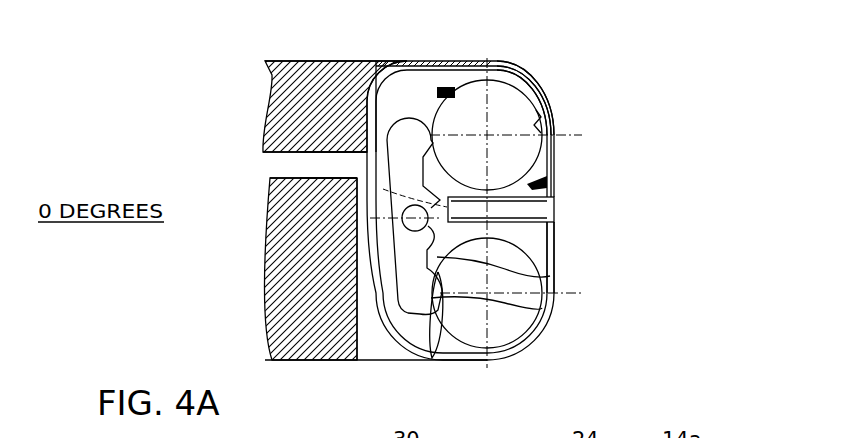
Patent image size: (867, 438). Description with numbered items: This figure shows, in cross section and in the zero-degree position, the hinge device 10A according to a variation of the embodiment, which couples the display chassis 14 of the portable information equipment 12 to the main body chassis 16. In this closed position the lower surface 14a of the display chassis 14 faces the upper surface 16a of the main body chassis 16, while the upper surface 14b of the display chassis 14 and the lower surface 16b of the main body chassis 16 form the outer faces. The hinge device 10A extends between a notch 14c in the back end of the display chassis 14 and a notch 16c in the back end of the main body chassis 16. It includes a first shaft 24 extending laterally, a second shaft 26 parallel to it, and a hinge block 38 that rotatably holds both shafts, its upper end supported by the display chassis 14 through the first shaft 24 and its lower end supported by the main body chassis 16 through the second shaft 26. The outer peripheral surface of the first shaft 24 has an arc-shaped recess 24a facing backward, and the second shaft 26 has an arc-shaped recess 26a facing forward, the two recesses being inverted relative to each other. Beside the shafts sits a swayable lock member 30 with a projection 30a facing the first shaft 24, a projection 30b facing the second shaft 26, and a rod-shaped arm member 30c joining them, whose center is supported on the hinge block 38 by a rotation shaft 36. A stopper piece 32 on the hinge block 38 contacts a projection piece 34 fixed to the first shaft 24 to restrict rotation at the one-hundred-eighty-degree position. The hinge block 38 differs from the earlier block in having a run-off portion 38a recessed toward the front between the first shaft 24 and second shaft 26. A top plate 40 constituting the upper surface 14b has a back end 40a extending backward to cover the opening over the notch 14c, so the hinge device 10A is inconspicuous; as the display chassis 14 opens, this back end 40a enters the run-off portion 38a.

The hinge device 10A is at (645, 200).
The portable information equipment 12 is at (185, 96).
The display chassis 14 is at (288, 53).
The lower surface of display chassis 14a is at (267, 152).
The upper surface of display chassis 14b is at (334, 60).
The notch 14c is at (377, 60).
The main body chassis 16 is at (288, 369).
The upper surface of main body chassis 16a is at (268, 178).
The lower surface of main body chassis 16b is at (336, 362).
The notch 16c is at (377, 362).
The first shaft 24 is at (517, 108).
The first recess 24a is at (536, 110).
The second shaft 26 is at (513, 325).
The second recess 26a is at (433, 355).
The lock member 30 is at (401, 104).
The projection 30a is at (481, 85).
The projection 30b is at (546, 303).
The arm member 30c is at (553, 275).
The stopper piece 32 is at (548, 183).
The projection piece 34 is at (464, 60).
The rotation shaft 36 is at (402, 218).
The hinge block 38 is at (554, 240).
The run-off portion 38a is at (510, 221).
The top plate 40 is at (438, 59).
The back end of top plate 40a is at (519, 64).